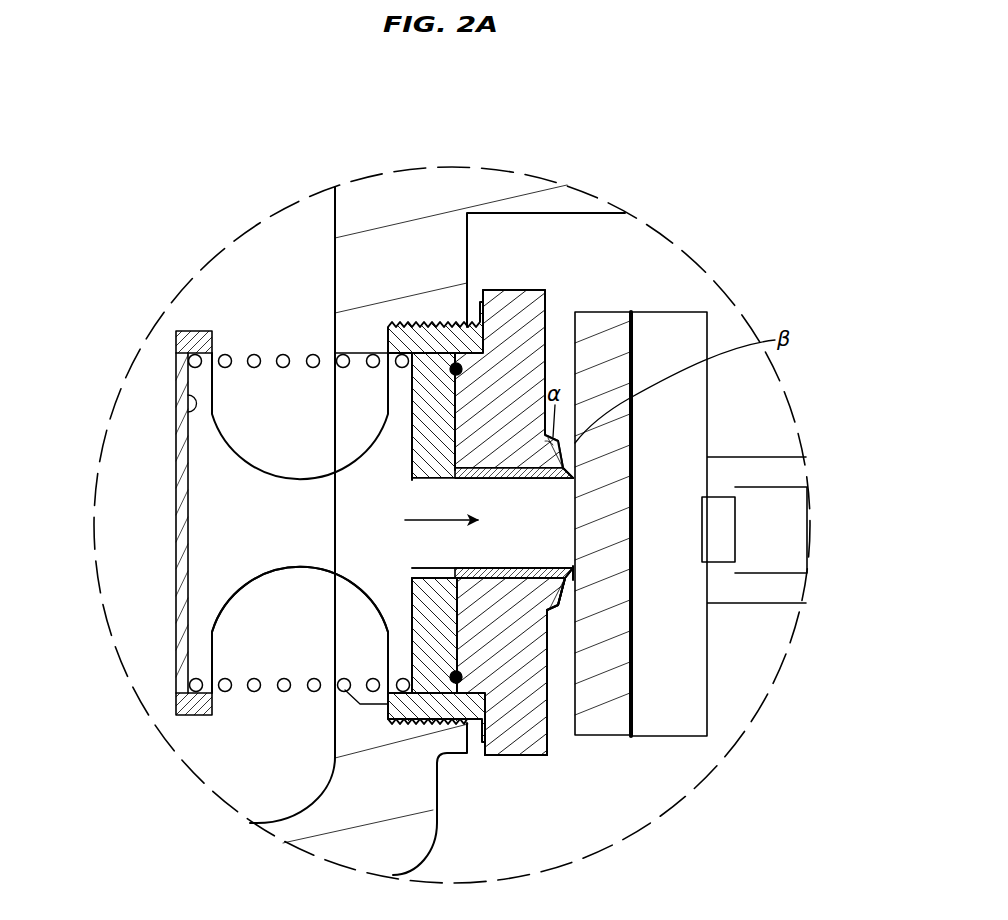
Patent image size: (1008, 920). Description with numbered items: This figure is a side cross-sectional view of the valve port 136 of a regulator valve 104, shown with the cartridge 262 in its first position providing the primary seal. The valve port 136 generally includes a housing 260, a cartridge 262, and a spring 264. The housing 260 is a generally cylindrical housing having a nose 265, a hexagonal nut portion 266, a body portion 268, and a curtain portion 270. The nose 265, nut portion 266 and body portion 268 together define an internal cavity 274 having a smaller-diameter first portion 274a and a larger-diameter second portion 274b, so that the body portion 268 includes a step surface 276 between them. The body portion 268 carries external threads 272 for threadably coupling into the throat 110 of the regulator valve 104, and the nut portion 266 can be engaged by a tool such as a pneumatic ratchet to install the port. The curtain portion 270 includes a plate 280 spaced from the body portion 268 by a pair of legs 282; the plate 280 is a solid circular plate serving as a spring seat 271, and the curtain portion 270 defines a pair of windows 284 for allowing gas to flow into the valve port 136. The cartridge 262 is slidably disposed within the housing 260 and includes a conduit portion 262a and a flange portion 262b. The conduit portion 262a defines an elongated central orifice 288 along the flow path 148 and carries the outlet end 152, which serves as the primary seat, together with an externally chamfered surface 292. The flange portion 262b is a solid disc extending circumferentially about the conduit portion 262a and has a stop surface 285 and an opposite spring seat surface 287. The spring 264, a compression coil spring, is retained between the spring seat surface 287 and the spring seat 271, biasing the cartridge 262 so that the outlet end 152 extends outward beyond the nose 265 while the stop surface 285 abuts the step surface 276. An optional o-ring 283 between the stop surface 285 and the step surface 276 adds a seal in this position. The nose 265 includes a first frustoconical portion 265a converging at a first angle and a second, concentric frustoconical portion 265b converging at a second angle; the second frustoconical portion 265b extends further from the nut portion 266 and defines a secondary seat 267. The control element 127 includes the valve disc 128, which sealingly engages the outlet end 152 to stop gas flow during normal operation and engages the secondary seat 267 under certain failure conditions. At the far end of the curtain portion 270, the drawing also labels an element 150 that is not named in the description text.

The regulator valve 104 is at (521, 186).
The valve port 136 is at (538, 287).
The external threads 272 is at (417, 326).
The control element 127 is at (633, 308).
The valve disc 128 is at (683, 337).
The central orifice 288 is at (575, 573).
The flange 150 is at (177, 701).
The plate 280 is at (187, 438).
The spring seat 271 is at (193, 406).
The legs 282 is at (283, 497).
The curtain portion 270 is at (264, 528).
The windows 284 is at (215, 372).
The spring 264 is at (254, 694).
The internal cavity 274 is at (430, 368).
The o-ring 283 is at (455, 362).
The first portion 274a is at (518, 481).
The second portion 274b is at (410, 355).
The step surface 276 is at (437, 366).
The stop surface 285 is at (433, 447).
The flow path 148 is at (405, 520).
The cartridge 262 is at (433, 682).
The nose 265 is at (560, 600).
The flange portion 262b is at (429, 611).
The conduit portion 262a is at (519, 564).
The spring seat surface 287 is at (411, 636).
The body portion 268 is at (410, 708).
The hexagonal nut portion 266 is at (503, 756).
The housing 260 is at (530, 738).
The first frustoconical portion 265a is at (553, 608).
The second frustoconical portion 265b is at (565, 582).
The externally chamfered surface 292 is at (575, 576).
The outlet end 152 is at (575, 573).
The secondary seat 267 is at (575, 467).
The throat 110 is at (352, 702).